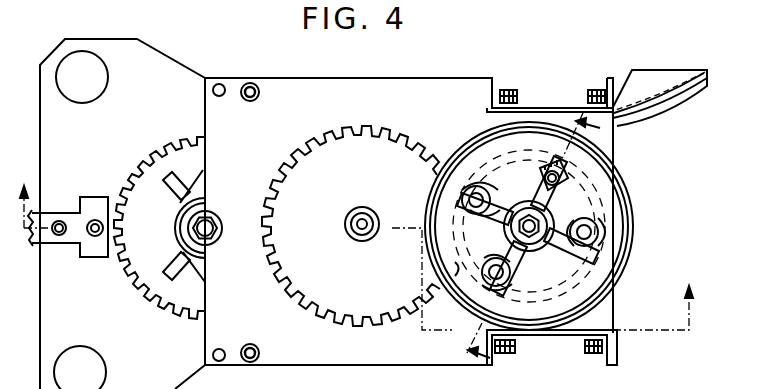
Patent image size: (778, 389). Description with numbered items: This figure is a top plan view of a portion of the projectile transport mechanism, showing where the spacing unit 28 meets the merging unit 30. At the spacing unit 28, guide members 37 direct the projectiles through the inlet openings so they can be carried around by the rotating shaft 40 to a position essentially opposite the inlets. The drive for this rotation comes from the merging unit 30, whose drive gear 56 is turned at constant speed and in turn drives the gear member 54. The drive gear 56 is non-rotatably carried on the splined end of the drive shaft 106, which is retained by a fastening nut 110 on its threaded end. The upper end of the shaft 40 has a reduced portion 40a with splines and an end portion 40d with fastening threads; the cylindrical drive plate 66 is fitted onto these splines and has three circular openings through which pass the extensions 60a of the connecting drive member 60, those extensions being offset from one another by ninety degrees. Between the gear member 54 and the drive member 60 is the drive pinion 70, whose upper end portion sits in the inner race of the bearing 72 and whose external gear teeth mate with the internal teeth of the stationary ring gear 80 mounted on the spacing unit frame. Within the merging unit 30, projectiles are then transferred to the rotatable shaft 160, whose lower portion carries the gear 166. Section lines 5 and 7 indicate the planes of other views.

The section line 5- 5 is at (550, 245).
The section line 7- 7 is at (359, 245).
The spacing unit 28 is at (572, 97).
The merging unit 30 is at (362, 78).
The guide members 37 is at (666, 72).
The shaft 40 is at (633, 212).
The reduced portion 40a is at (542, 381).
The end portion 40d is at (455, 268).
The gear member 54 is at (470, 183).
The drive gear 56 is at (319, 135).
The connecting drive member 60 is at (480, 192).
The extensions 60a is at (452, 214).
The drive plate 66 is at (612, 282).
The drive pinion 70 is at (551, 170).
The bearing 72 is at (612, 182).
The stationary ring gear 80 is at (548, 222).
The drive shaft 106 is at (348, 220).
The fastening nut 110 is at (362, 212).
The rotatable shaft 160 is at (218, 216).
The gear 166 is at (174, 136).